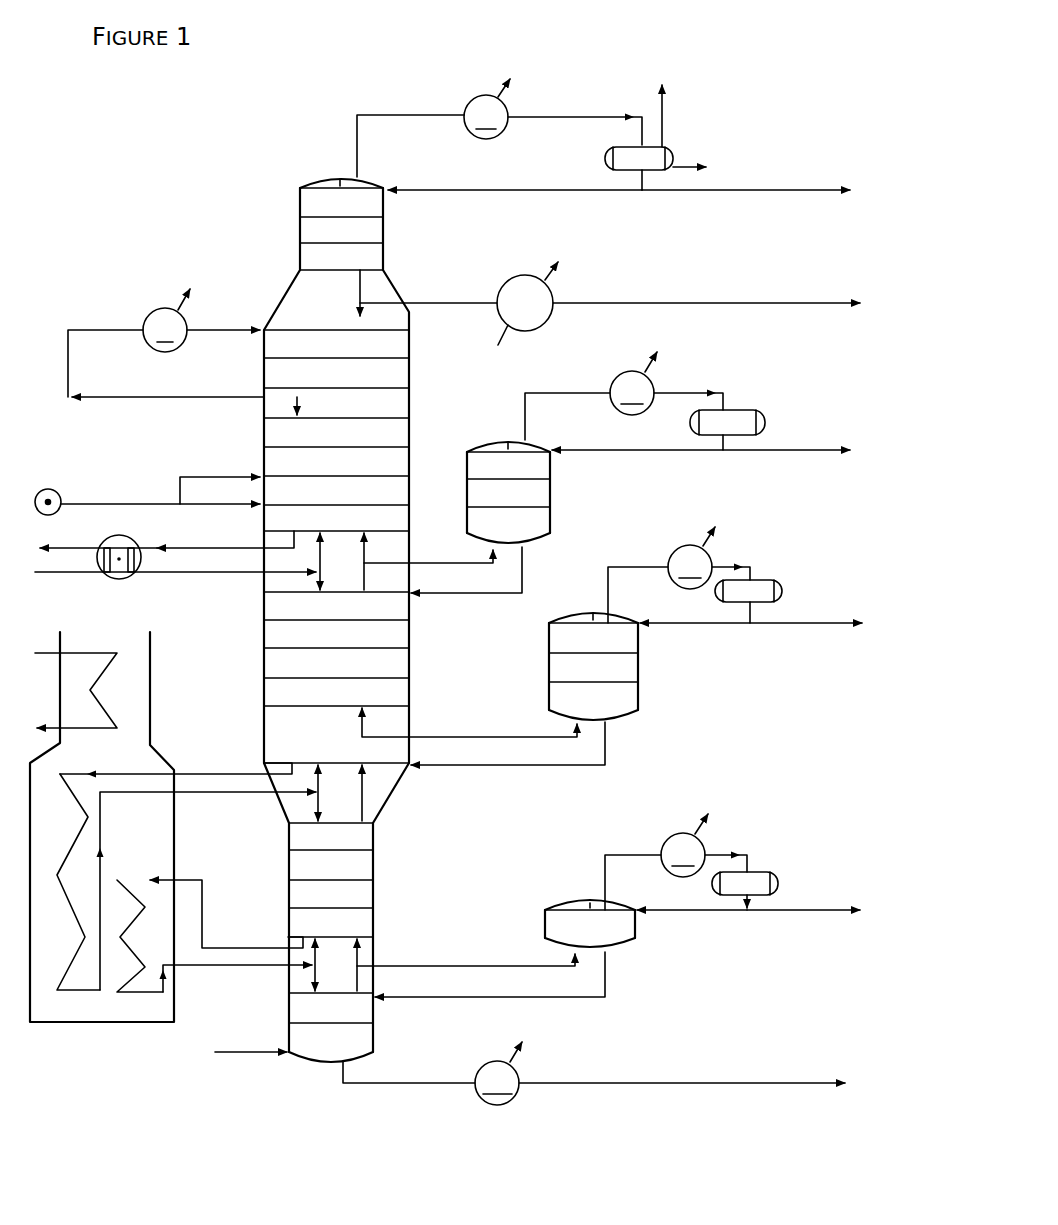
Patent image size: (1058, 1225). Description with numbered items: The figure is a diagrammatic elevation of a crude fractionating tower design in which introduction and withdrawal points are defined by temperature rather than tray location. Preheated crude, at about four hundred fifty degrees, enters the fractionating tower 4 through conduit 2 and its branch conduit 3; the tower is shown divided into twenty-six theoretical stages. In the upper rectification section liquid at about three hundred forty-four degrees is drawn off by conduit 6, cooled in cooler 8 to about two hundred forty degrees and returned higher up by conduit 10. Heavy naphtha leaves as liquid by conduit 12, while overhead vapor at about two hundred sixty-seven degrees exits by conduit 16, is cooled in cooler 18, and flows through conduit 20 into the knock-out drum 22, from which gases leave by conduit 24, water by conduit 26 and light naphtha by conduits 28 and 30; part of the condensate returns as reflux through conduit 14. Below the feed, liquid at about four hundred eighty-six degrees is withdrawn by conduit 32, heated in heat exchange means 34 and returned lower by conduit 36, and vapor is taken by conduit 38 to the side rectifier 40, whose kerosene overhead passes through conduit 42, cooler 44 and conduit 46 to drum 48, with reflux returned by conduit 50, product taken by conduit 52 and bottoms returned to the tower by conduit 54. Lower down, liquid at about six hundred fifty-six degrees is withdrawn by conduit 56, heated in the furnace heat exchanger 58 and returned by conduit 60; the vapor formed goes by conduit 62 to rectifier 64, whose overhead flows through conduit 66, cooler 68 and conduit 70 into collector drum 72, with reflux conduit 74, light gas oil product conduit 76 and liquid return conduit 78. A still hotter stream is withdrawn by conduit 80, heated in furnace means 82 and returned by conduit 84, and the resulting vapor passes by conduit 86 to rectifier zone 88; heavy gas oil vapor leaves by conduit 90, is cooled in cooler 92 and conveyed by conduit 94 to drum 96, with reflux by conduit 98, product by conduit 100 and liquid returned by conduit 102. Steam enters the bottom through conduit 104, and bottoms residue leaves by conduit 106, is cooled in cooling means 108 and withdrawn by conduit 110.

The conduit 2 is at (75, 497).
The branch conduit 3 is at (205, 477).
The fractionating tower 4 is at (412, 482).
The conduit 6 is at (159, 398).
The cooler 8 is at (140, 368).
The conduit 10 is at (221, 327).
The conduit 12 is at (470, 298).
The conduit 14 is at (530, 191).
The conduit 16 is at (432, 117).
The cooler 18 is at (465, 155).
The conduit 20 is at (573, 117).
The knock-out drum 22 is at (666, 146).
The conduit 24 is at (664, 117).
The conduit 26 is at (695, 163).
The conduit 28 is at (632, 188).
The conduit 30 is at (720, 190).
The conduit 32 is at (176, 549).
The heat exchange means 34 is at (106, 540).
The conduit 36 is at (164, 570).
The conduit 38 is at (464, 558).
The side rectifier 40 is at (553, 498).
The conduit 42 is at (573, 388).
The cooler 44 is at (612, 428).
The conduit 46 is at (678, 392).
The drum 48 is at (733, 408).
The conduit 50 is at (675, 446).
The conduit 52 is at (785, 446).
The conduit 54 is at (525, 571).
The conduit 56 is at (185, 770).
The heat exchanger 58 is at (70, 850).
The conduit 60 is at (257, 795).
The conduit 62 is at (510, 732).
The rectifier 64 is at (640, 673).
The conduit 66 is at (640, 570).
The cooler 68 is at (670, 602).
The conduit 70 is at (728, 562).
The collector drum 72 is at (757, 581).
The conduit 74 is at (727, 624).
The conduit 76 is at (795, 622).
The conduit 78 is at (612, 748).
The conduit 80 is at (203, 898).
The furnace means 82 is at (135, 930).
The conduit 84 is at (208, 972).
The conduit 86 is at (490, 962).
The rectifier zone 88 is at (637, 938).
The conduit 90 is at (604, 871).
The cooler 92 is at (664, 892).
The conduit 94 is at (735, 853).
The drum 96 is at (752, 872).
The conduit 98 is at (722, 916).
The conduit 100 is at (787, 908).
The conduit 102 is at (610, 980).
The conduit 104 is at (247, 1050).
The conduit 106 is at (382, 1086).
The cooling means 108 is at (478, 1118).
The conduit 110 is at (657, 1088).